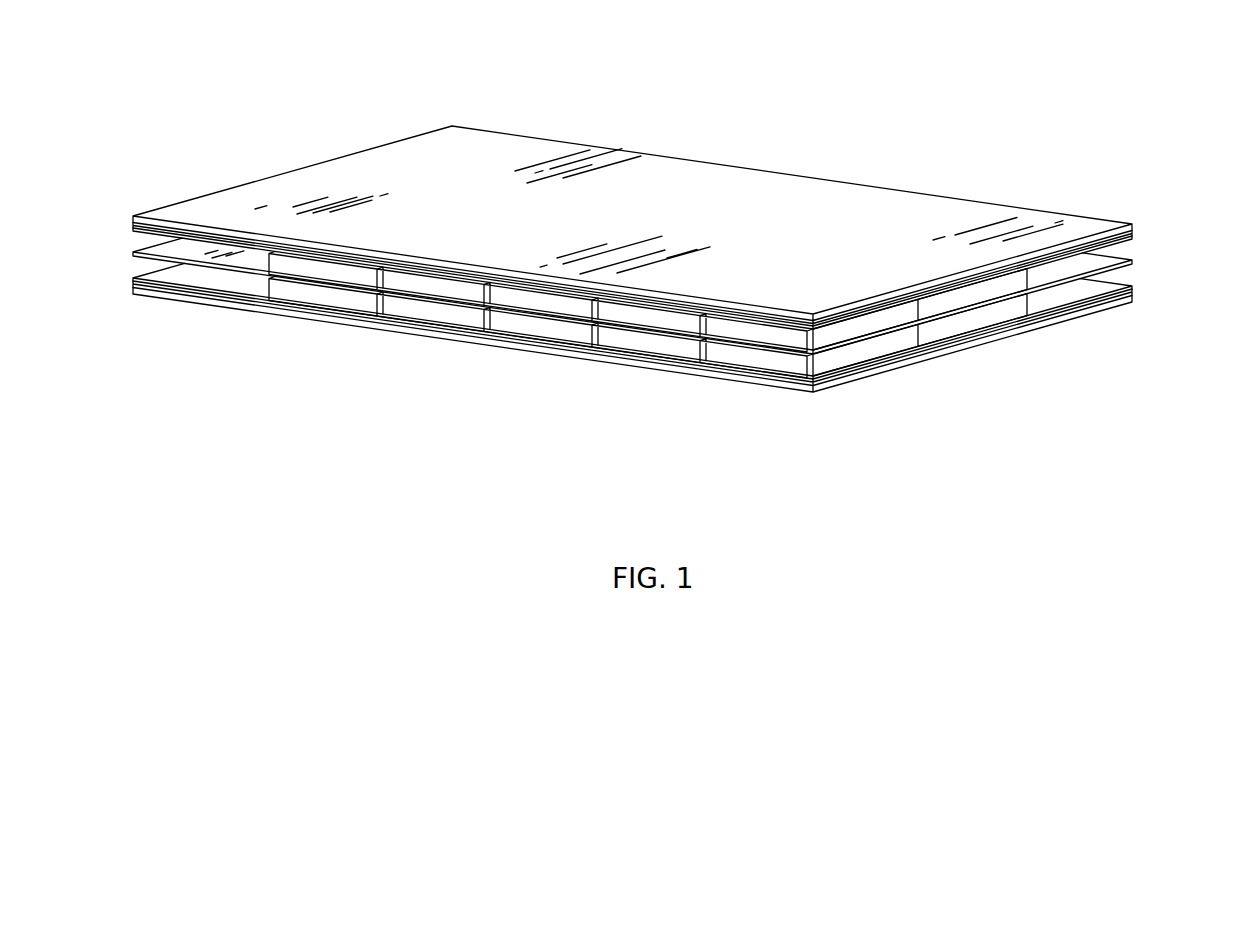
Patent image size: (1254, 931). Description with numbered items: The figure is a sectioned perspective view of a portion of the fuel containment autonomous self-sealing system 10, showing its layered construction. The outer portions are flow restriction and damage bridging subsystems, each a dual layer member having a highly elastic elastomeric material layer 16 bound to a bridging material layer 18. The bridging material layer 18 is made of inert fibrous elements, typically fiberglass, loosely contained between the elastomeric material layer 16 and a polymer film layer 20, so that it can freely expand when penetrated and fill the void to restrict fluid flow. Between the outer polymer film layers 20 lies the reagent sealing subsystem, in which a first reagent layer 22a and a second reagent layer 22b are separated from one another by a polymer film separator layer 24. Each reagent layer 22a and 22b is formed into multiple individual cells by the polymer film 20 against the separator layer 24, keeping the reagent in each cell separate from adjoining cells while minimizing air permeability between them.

The fuel containment autonomous self-sealing system 10 is at (800, 100).
The elastomeric material layer 16 is at (972, 210).
The bridging material layer 18 is at (1103, 242).
The polymer film layer 20 is at (1132, 240).
The first reagent layer 22a is at (383, 250).
The second reagent layer 22b is at (337, 305).
The separator layer 24 is at (1103, 260).